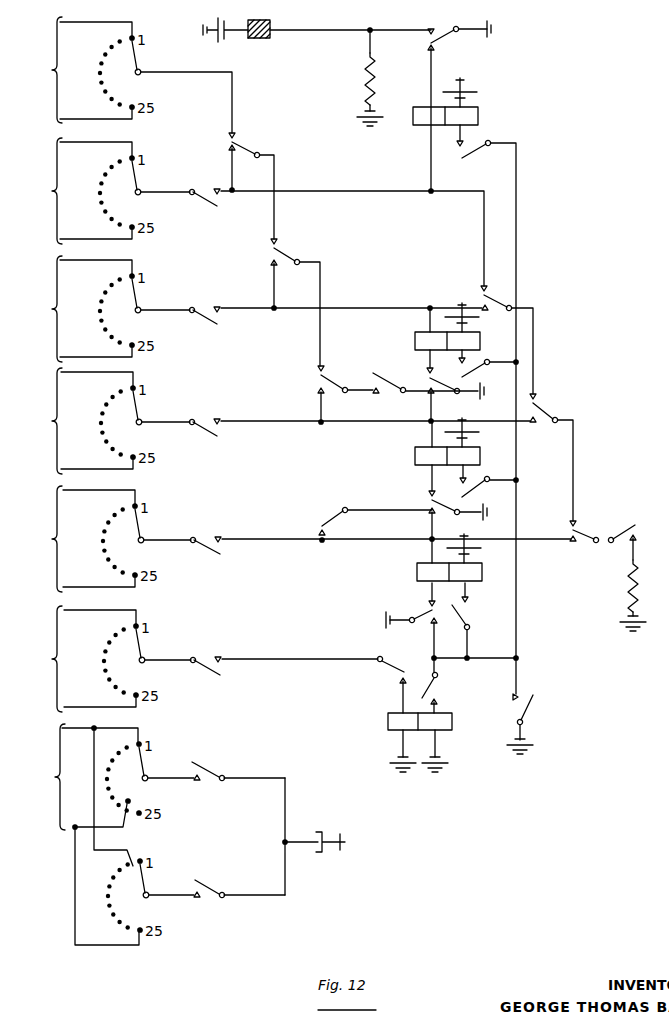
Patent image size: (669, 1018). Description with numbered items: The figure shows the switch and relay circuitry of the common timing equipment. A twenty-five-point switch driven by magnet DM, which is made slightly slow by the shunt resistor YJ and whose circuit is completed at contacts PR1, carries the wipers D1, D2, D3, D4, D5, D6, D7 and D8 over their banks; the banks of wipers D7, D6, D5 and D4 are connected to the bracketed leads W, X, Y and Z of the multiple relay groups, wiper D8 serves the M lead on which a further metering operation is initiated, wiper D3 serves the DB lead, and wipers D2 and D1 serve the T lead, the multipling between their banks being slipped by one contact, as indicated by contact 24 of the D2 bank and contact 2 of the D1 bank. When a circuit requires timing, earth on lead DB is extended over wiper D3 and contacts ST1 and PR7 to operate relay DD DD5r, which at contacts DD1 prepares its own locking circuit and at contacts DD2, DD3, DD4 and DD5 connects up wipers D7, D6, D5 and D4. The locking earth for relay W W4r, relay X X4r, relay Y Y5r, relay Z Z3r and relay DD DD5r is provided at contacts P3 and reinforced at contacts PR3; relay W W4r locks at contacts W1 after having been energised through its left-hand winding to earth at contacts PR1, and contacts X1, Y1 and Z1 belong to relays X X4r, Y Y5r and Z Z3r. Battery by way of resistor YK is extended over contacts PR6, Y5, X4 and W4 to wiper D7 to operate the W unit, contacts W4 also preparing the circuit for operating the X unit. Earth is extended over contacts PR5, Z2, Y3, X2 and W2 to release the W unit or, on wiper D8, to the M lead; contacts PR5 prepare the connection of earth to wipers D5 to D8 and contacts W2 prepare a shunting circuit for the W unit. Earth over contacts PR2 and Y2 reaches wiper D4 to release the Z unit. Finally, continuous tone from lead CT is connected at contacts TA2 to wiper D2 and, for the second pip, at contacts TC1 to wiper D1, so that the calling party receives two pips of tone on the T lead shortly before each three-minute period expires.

The M lead M is at (47, 70).
The W lead W is at (47, 191).
The X lead X is at (48, 309).
The Y lead Y is at (47, 421).
The Z lead Z is at (48, 539).
The DB lead DB is at (43, 659).
The T lead T is at (52, 777).
The wiper D8 is at (107, 70).
The wiper D7 is at (107, 190).
The wiper D6 is at (107, 308).
The wiper D5 is at (108, 420).
The wiper D4 is at (110, 538).
The wiper D3 is at (111, 658).
The wiper D2 is at (112, 776).
The wiper D1 is at (118, 836).
The switch contact 24 is at (113, 811).
The switch contact 2 is at (128, 843).
The contacts TA2 is at (216, 769).
The contacts TC1 is at (217, 886).
The lead CT is at (336, 838).
The magnet DM is at (276, 58).
The resistor YJ is at (374, 77).
The contacts PR1 is at (459, 105).
The relay W W4r is at (501, 108).
The contacts W1 is at (486, 391).
The contacts W2 is at (207, 155).
The contacts DD2 is at (312, 229).
The contacts X2 is at (295, 302).
The contacts DD3 is at (311, 307).
The contacts W4 is at (507, 336).
The relay X X4r is at (410, 340).
The relay contact X1 is at (488, 369).
The contacts PR5 is at (445, 386).
The contacts Z2 is at (377, 380).
The contacts Y3 is at (333, 395).
The contacts DD4 is at (336, 419).
The contacts X4 is at (551, 457).
The relay Y Y5r is at (411, 457).
The relay contact Y1 is at (489, 485).
The contacts PR2 is at (457, 503).
The contacts Y2 is at (365, 524).
The contacts DD5 is at (357, 537).
The contacts Y5 is at (568, 531).
The contacts PR6 is at (623, 534).
The resistor YK is at (622, 595).
The relay Z Z3r is at (406, 573).
The relay contact Z1 is at (471, 621).
The contacts PR3 is at (411, 621).
The contacts ST1 is at (261, 657).
The contacts PR7 is at (385, 676).
The contacts DD1 is at (469, 685).
The relay DD DD5r is at (381, 728).
The contacts P3 is at (532, 705).